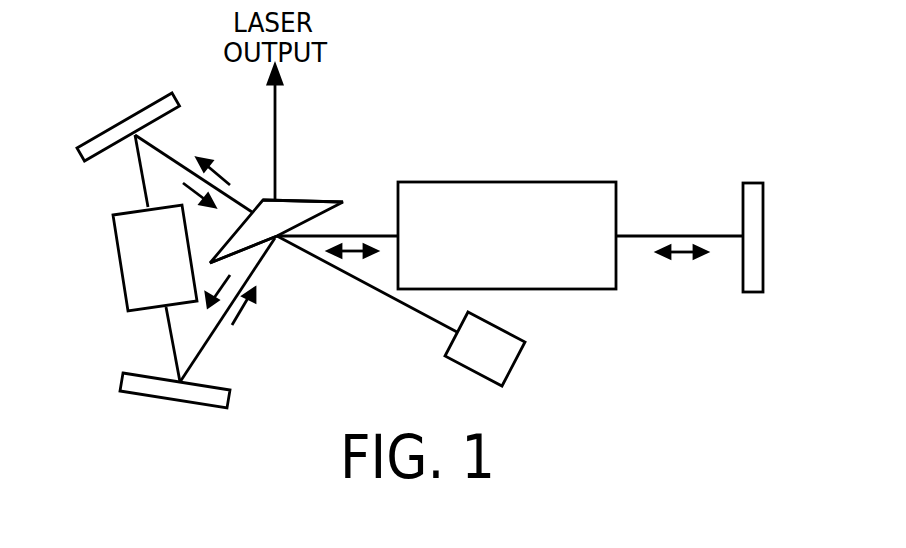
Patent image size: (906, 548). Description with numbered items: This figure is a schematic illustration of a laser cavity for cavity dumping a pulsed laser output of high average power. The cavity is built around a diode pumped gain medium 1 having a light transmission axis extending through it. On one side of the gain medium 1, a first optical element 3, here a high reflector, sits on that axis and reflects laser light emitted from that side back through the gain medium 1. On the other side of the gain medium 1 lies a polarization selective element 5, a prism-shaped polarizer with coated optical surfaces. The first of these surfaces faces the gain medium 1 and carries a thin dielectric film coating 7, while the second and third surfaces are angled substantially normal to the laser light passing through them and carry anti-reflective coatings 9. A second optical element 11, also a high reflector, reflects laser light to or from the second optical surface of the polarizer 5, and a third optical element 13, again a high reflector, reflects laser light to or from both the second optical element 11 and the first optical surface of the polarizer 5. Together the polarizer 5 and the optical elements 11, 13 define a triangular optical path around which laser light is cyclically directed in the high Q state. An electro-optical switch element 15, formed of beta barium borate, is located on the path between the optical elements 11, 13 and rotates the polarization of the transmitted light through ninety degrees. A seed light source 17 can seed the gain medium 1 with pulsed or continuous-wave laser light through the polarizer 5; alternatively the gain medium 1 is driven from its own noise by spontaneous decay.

The diode pumped gain medium 1 is at (508, 182).
The first optical element 3 is at (753, 183).
The polarization selective element 5 is at (288, 210).
The thin dielectric film coating 7 is at (247, 248).
The anti-reflective coatings 9 is at (265, 197).
The second optical element 11 is at (122, 127).
The third optical element 13 is at (130, 387).
The electro-optical switch element 15 is at (133, 250).
The seed light source 17 is at (505, 357).